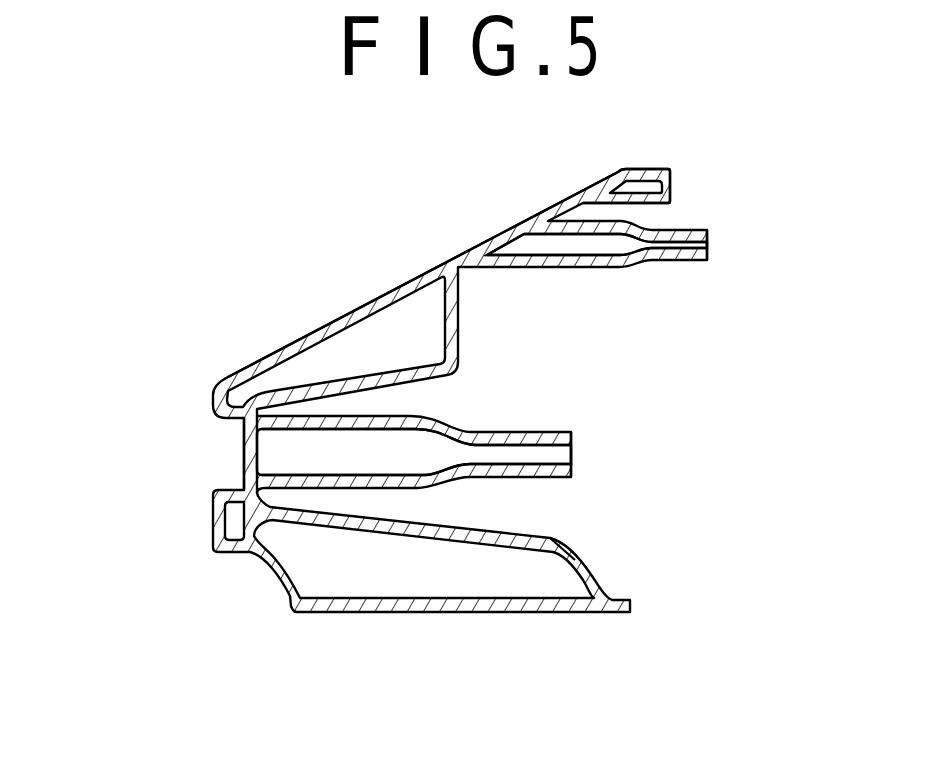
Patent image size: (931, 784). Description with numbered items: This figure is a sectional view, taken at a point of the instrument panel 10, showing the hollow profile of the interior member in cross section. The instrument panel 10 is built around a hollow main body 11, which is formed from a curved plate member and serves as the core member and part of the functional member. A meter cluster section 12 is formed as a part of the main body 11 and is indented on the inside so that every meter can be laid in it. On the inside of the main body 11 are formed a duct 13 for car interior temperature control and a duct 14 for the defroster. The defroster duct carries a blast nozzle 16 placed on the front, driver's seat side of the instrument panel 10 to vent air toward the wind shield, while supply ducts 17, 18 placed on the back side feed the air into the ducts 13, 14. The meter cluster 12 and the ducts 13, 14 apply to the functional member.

The instrument panel 10 is at (172, 342).
The hollow main body 11 is at (343, 326).
The meter cluster section 12 is at (243, 458).
The duct for car interior temperature control 13 is at (410, 453).
The duct for defroster 14 is at (578, 245).
The blast nozzle 16 is at (507, 228).
The supply duct 17 is at (573, 455).
The supply duct 18 is at (708, 243).